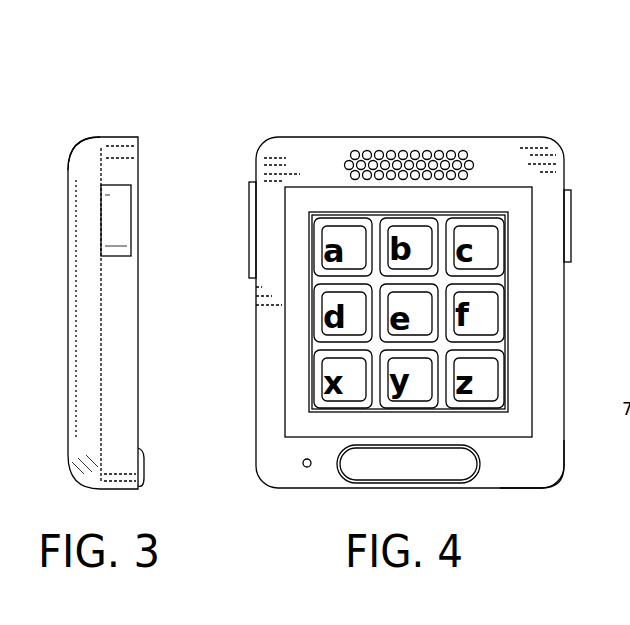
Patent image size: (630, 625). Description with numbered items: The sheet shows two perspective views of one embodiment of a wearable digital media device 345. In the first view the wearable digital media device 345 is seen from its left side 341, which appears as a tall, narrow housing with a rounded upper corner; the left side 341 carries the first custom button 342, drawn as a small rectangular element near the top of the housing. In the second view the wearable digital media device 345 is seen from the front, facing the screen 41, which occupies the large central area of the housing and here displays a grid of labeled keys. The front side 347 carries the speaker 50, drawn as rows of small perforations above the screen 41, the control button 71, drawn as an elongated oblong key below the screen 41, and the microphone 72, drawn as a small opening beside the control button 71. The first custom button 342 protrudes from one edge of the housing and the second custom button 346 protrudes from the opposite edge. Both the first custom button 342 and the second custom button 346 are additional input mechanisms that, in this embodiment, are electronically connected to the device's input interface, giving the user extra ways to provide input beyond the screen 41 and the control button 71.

In FIG. 4, the screen 41 is at (310, 200).
In FIG. 4, the speaker 50 is at (405, 150).
In FIG. 3, the control button 71 is at (144, 462).
In FIG. 4, the control button 71 is at (387, 465).
In FIG. 4, the microphone 72 is at (302, 463).
In FIG. 3, the left side 341 is at (90, 162).
In FIG. 3, the first custom button 342 is at (113, 230).
In FIG. 4, the first custom button 342 is at (249, 215).
In FIG. 3, the wearable digital media device 345 is at (150, 130).
In FIG. 4, the wearable digital media device 345 is at (545, 122).
In FIG. 4, the second custom button 346 is at (571, 220).
In FIG. 4, the front side 347 is at (527, 467).